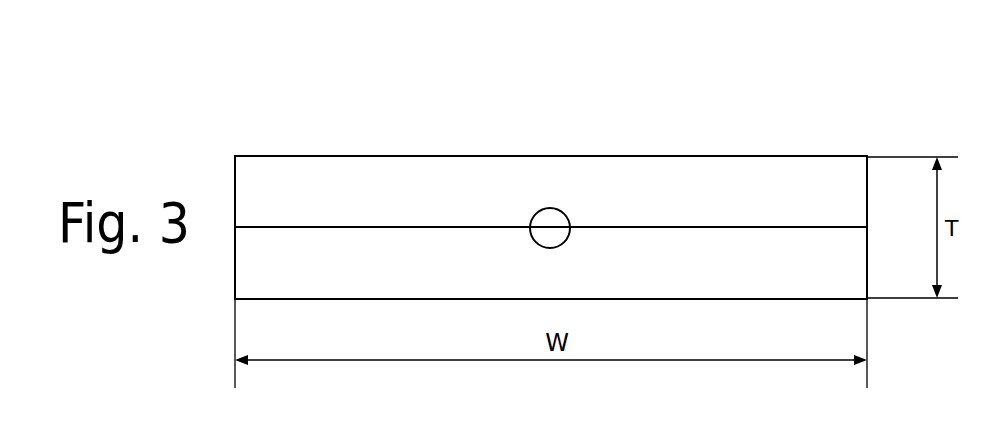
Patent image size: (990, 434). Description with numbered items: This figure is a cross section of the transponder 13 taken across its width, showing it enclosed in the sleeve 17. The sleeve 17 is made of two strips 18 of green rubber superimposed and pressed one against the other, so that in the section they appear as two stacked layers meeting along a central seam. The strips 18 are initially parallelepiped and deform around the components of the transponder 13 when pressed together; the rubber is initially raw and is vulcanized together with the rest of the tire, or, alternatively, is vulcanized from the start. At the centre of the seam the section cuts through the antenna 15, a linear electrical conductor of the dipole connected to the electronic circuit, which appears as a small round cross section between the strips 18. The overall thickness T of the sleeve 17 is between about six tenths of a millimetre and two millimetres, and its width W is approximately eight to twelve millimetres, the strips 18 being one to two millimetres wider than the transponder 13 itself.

The transponder 13 is at (163, 105).
The antenna 15 is at (550, 222).
The sleeve 17 is at (293, 122).
The strips 18 is at (831, 190).